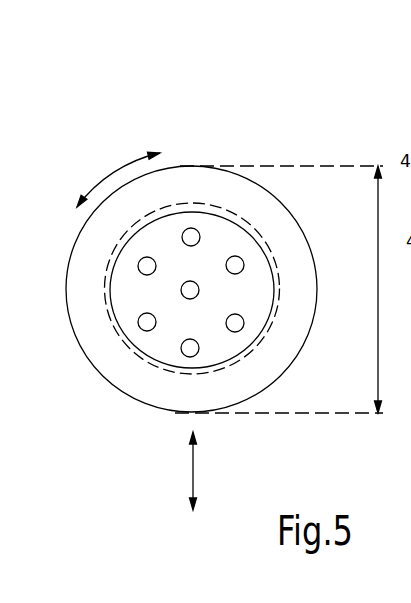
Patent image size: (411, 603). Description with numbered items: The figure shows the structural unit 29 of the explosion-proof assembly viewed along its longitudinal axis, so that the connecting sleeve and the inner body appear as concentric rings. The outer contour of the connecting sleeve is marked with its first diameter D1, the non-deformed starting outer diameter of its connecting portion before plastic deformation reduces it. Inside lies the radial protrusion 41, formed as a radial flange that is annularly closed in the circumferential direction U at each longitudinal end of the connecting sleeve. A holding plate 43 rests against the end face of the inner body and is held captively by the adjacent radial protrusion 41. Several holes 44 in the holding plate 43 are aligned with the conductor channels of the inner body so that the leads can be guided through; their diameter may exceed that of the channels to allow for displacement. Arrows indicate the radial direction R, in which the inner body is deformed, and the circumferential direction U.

The structural unit 29 is at (250, 142).
The radial protrusion 41 is at (210, 363).
The holding plate 43 is at (253, 292).
The hole 44 is at (193, 236).
The first diameter D1 is at (378, 262).
The circumferential direction U is at (103, 178).
The radial direction R is at (193, 466).